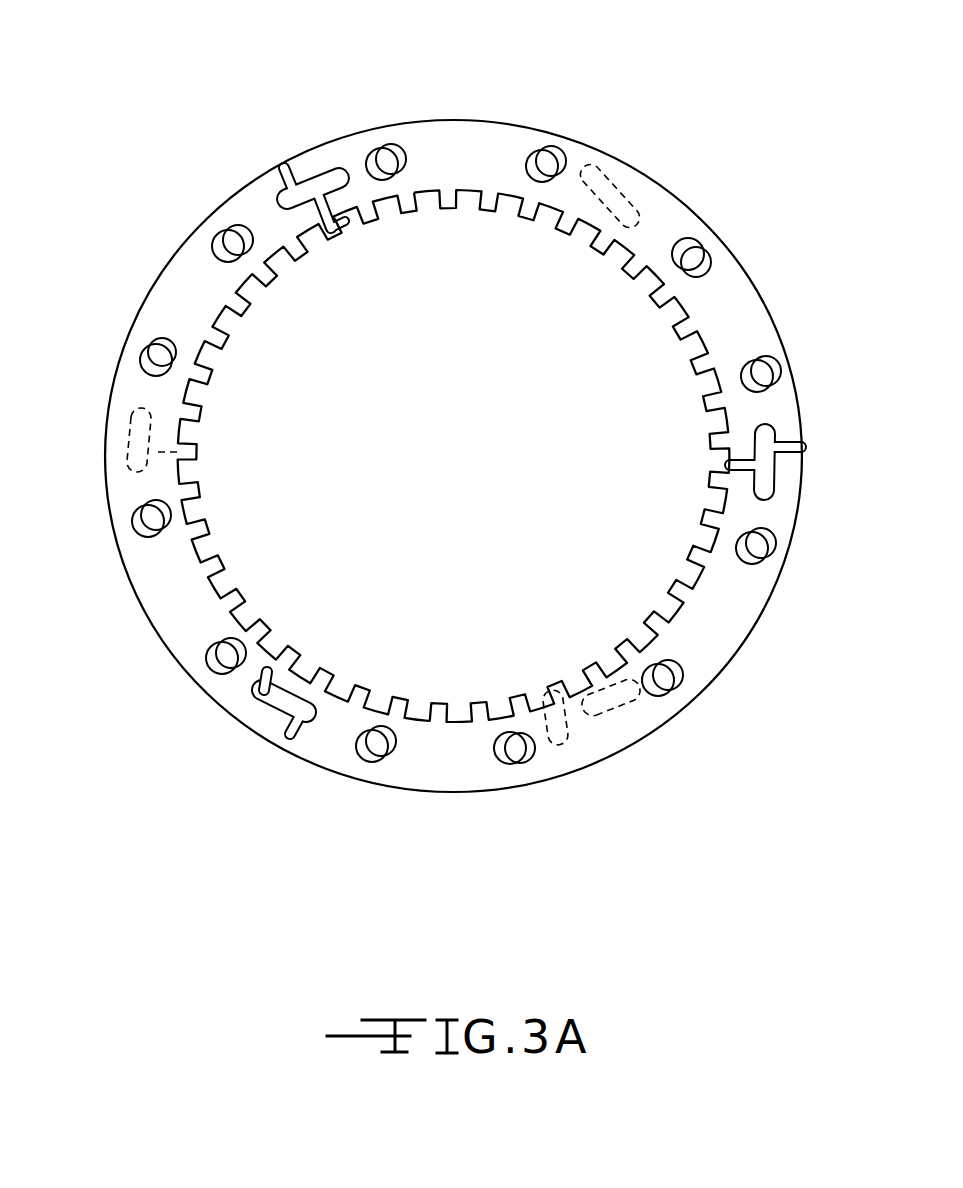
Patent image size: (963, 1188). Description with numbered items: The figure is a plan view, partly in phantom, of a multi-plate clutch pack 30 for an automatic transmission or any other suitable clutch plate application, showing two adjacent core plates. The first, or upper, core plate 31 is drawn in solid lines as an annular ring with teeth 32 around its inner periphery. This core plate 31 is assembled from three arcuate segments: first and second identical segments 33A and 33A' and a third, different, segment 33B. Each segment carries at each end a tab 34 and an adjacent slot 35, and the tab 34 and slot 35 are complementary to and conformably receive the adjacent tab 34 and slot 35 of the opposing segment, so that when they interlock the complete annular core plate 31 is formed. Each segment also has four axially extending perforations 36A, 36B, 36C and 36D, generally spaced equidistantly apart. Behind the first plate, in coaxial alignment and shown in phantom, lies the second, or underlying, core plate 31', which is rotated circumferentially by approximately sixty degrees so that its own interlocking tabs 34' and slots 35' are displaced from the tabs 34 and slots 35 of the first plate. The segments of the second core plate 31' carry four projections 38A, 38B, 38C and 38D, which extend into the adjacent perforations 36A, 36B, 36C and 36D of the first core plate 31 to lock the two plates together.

The multi-plate clutch pack 30 is at (311, 50).
The first core plate 31 is at (453, 410).
The second core plate 31' is at (715, 223).
The teeth 32 is at (600, 218).
The first segment 33A is at (171, 576).
The second segment 33A' is at (730, 311).
The third segment 33B is at (738, 628).
The tab 34 is at (324, 686).
The interlocking tab 34' is at (611, 661).
The slot 35 is at (299, 646).
The interlocking slot 35' is at (529, 699).
The perforation 36A is at (215, 663).
The perforation 36B is at (136, 524).
The perforation 36C is at (150, 354).
The perforation 36D is at (213, 240).
The projection 38A is at (703, 252).
The projection 38B is at (765, 372).
The projection 38C is at (758, 554).
The projection 38D is at (668, 688).